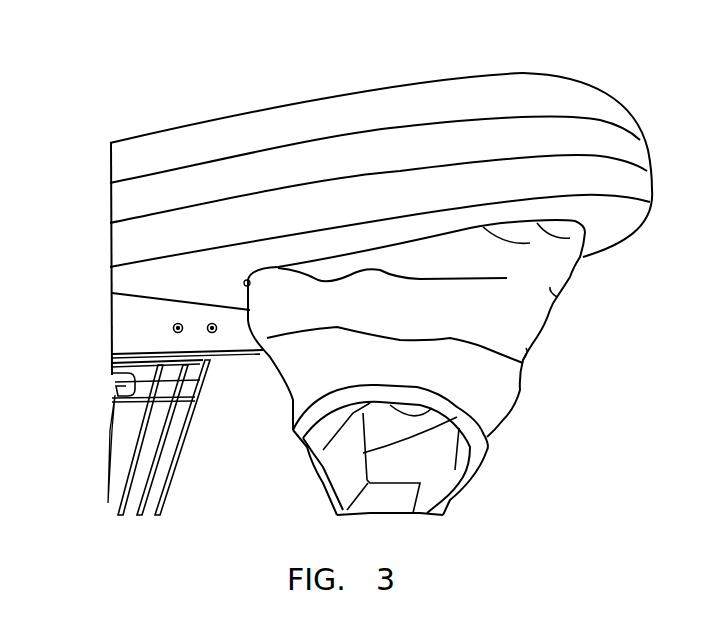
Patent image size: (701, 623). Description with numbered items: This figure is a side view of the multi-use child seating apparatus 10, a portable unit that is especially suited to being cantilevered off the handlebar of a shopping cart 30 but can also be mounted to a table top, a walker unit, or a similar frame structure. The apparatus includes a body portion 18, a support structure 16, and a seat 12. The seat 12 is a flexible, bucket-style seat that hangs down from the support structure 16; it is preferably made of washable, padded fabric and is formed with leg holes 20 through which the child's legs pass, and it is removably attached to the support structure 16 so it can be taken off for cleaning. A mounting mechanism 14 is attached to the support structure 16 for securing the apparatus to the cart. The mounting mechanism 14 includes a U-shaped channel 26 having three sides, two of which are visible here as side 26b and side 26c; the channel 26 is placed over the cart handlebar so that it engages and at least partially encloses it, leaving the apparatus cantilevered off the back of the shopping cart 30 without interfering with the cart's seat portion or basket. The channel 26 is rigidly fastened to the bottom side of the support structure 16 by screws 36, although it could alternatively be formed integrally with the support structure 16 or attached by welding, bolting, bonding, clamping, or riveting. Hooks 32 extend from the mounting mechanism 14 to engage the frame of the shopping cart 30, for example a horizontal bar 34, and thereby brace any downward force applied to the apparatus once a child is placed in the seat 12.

The multi-use child seating apparatus 10 is at (646, 96).
The seat 12 is at (423, 314).
The mounting mechanism 14 is at (98, 409).
The support structure 16 is at (387, 216).
The body portion 18 is at (372, 122).
The leg holes 20 is at (427, 420).
The U-shaped channel 26 is at (223, 355).
The side of the channel 26b is at (166, 331).
The side of the channel 26c is at (108, 355).
The shopping cart 30 is at (191, 463).
The hooks 32 is at (113, 397).
The horizontal bar 34 is at (147, 390).
The screws 36 is at (209, 324).